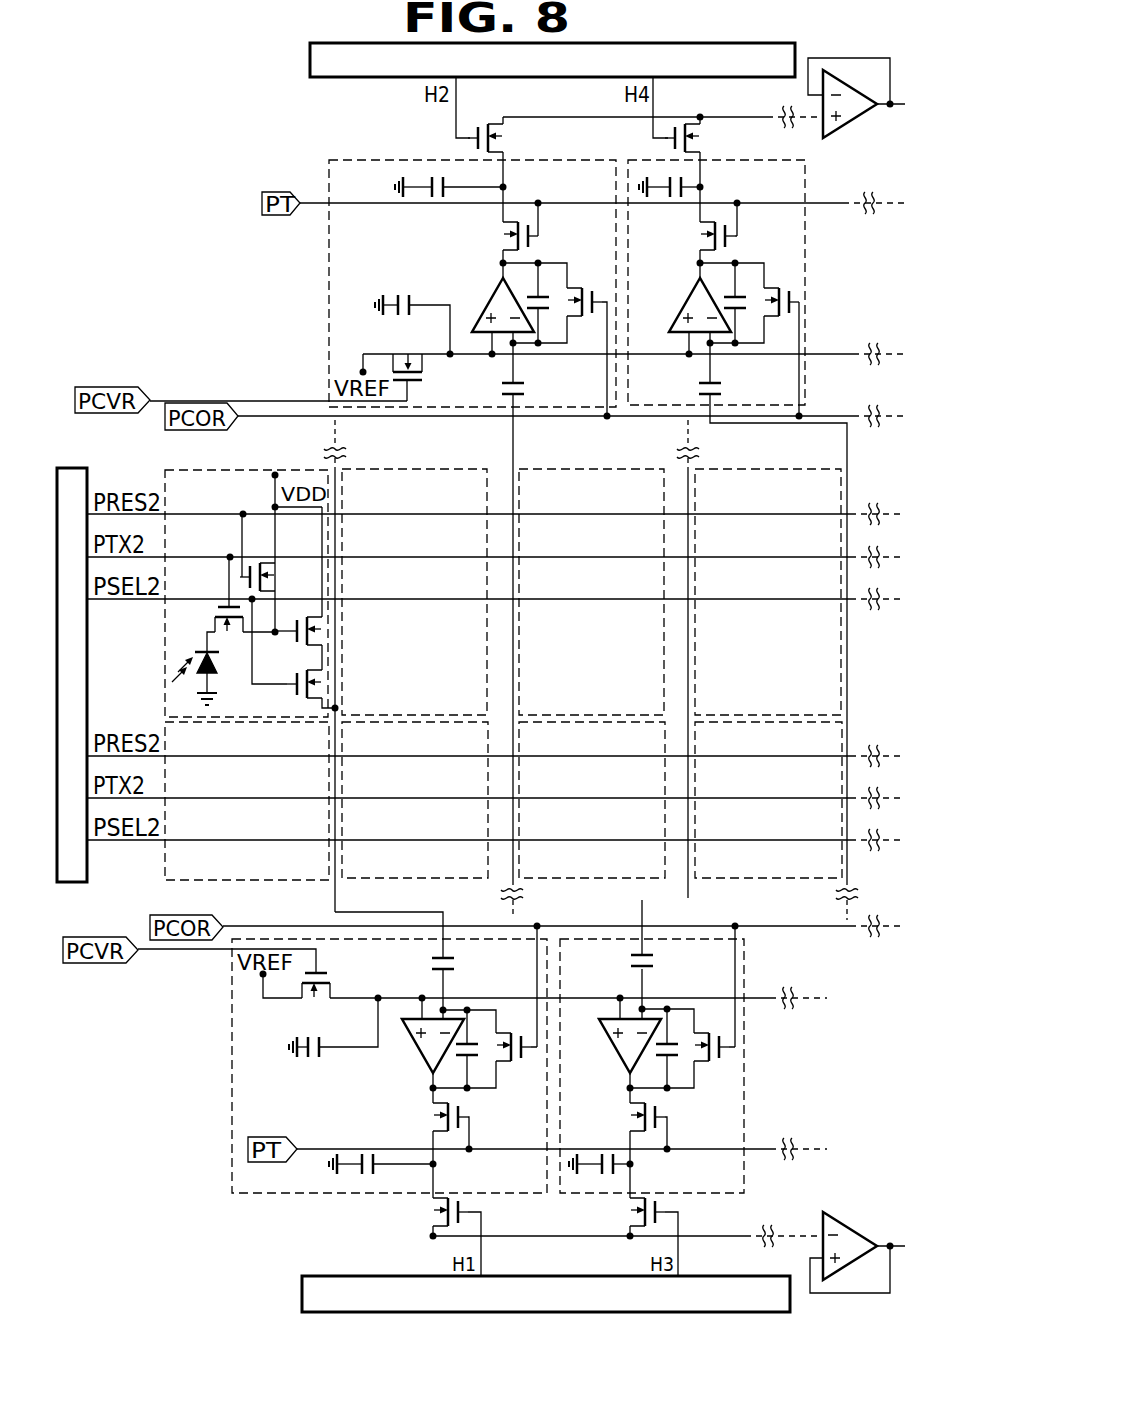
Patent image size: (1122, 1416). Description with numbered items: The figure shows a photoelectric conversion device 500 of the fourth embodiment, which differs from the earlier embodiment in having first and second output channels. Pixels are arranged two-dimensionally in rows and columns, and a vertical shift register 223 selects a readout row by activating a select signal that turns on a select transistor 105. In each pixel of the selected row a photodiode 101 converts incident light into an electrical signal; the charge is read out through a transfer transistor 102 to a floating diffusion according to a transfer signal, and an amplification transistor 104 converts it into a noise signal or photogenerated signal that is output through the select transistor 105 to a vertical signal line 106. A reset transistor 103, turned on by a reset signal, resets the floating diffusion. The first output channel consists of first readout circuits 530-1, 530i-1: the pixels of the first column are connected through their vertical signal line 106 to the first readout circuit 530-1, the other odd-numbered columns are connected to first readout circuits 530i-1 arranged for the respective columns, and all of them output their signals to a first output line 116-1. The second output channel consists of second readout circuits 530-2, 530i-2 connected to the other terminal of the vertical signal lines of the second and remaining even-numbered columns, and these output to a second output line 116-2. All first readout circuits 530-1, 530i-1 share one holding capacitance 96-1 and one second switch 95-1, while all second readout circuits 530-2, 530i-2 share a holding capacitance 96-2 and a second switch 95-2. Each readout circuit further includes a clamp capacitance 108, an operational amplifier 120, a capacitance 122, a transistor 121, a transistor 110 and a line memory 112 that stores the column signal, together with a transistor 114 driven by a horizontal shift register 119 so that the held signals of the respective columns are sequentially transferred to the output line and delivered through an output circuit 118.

The horizontal shift register 119 is at (310, 63).
The transistor 114 is at (490, 124).
The second output line 116-2 is at (627, 116).
The output circuit 118 is at (858, 128).
The line memory 112 is at (441, 177).
The transistor 110 is at (501, 228).
The capacitance 122 is at (558, 260).
The transistor 121 is at (548, 295).
The operational amplifier 120 is at (477, 320).
The holding capacitance 96-2 is at (404, 293).
The second readout circuit 530-2 is at (329, 305).
The second switch 95-2 is at (425, 378).
The second readout circuit 530i-2 is at (807, 277).
The vertical shift register 223 is at (88, 474).
The reset transistor 103 is at (260, 561).
The transfer transistor 102 is at (215, 607).
The photodiode 101 is at (191, 657).
The amplification transistor 104 is at (296, 639).
The select transistor 105 is at (300, 707).
The vertical signal line 106 is at (335, 906).
The clamp capacitance 108 is at (458, 966).
The second switch 95-1 is at (333, 981).
The first readout circuit 530-1 is at (230, 1074).
The holding capacitance 96-1 is at (317, 1060).
The first readout circuit 530i-1 is at (746, 1072).
The first output line 116-1 is at (572, 1236).
The photoelectric conversion device 500 is at (178, 1240).